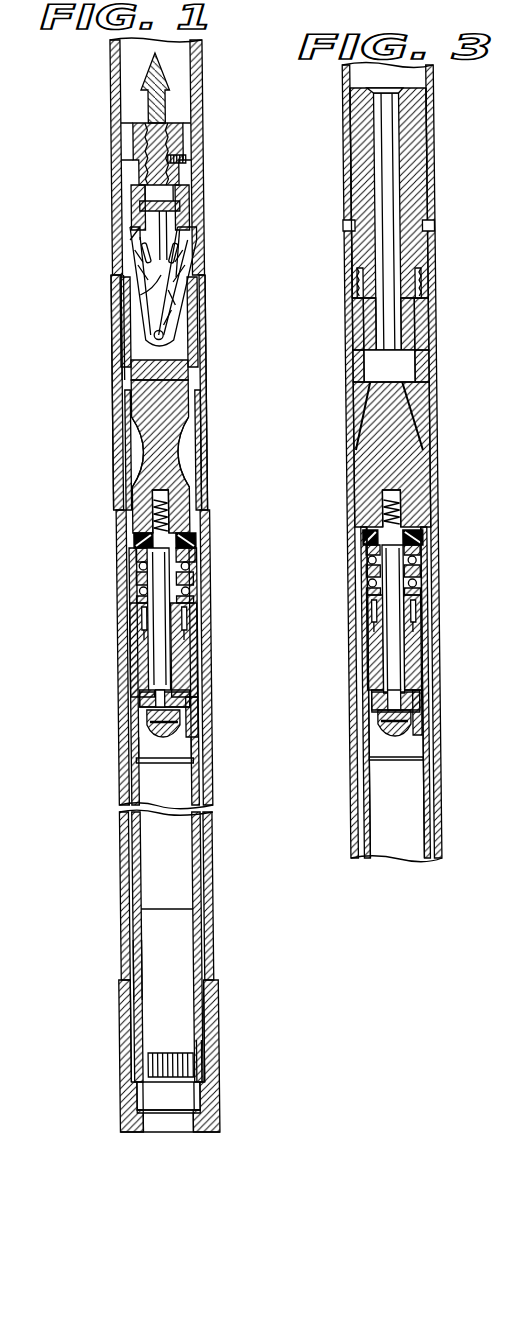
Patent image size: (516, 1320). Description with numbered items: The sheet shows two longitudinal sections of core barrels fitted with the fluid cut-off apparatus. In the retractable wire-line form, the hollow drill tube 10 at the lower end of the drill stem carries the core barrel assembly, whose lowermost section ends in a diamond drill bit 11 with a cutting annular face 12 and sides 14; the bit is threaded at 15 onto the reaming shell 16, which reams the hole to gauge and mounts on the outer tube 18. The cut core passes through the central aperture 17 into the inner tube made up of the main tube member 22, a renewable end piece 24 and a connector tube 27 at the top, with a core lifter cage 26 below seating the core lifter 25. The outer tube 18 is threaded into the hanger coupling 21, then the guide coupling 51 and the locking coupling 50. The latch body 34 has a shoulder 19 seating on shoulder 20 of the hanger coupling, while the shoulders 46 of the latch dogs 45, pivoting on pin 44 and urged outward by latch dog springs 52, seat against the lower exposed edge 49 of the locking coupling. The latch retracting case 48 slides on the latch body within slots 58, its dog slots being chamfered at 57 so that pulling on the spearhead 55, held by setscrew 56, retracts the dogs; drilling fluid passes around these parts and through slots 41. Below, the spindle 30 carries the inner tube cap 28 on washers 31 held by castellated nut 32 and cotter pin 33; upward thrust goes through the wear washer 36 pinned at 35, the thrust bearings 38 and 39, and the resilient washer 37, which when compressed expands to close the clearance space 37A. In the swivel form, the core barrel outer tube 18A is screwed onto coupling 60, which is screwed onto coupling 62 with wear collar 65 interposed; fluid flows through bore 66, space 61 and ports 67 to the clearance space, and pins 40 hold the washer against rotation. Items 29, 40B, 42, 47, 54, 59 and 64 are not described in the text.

In FIG. 1, the drill tube 10 is at (202, 50).
In FIG. 3, the drill tube 10 is at (432, 93).
In FIG. 1, the drill bit 11 is at (208, 1090).
In FIG. 1, the annular face 12 is at (196, 1133).
In FIG. 1, the sides 14 is at (204, 1123).
In FIG. 1, the threads 15 is at (206, 1048).
In FIG. 1, the reaming shell 16 is at (206, 1005).
In FIG. 1, the central aperture 17 is at (160, 1130).
In FIG. 1, the outer tube 18 is at (200, 877).
In FIG. 3, the core barrel outer tube 18A is at (430, 793).
In FIG. 1, the shoulder 19 is at (125, 467).
In FIG. 1, the shoulder 20 is at (125, 457).
In FIG. 1, the hanger coupling 21 is at (202, 482).
In FIG. 1, the main tube member 22 is at (124, 790).
In FIG. 3, the main tube member 22 is at (356, 817).
In FIG. 1, the renewable end piece 24 is at (126, 967).
In FIG. 1, the core lifter 25 is at (142, 1048).
In FIG. 1, the core lifter cage 26 is at (125, 1092).
In FIG. 1, the connector tube 27 is at (132, 720).
In FIG. 3, the connector tube 27 is at (352, 718).
In FIG. 1, the inner tube cap 28 is at (130, 645).
In FIG. 3, the inner tube cap 28 is at (355, 642).
In FIG. 1, the retainer 29 is at (189, 707).
In FIG. 3, the retainer 29 is at (412, 703).
In FIG. 1, the spindle 30 is at (156, 650).
In FIG. 3, the spindle 30 is at (393, 648).
In FIG. 1, the washers 31 is at (132, 697).
In FIG. 3, the washers 31 is at (364, 693).
In FIG. 1, the castellated nut 32 is at (149, 717).
In FIG. 3, the castellated nut 32 is at (367, 708).
In FIG. 1, the cotter pin 33 is at (159, 732).
In FIG. 3, the cotter pin 33 is at (395, 725).
In FIG. 1, the latch body 34 is at (172, 420).
In FIG. 1, the pin 35 is at (183, 618).
In FIG. 3, the pin 35 is at (411, 620).
In FIG. 1, the wear washer 36 is at (188, 602).
In FIG. 3, the wear washer 36 is at (418, 600).
In FIG. 1, the resilient washer 37 is at (187, 540).
In FIG. 3, the resilient washer 37 is at (356, 537).
In FIG. 1, the clearance space 37A is at (124, 540).
In FIG. 3, the clearance space 37A is at (422, 538).
In FIG. 1, the thrust bearing 38 is at (130, 600).
In FIG. 3, the thrust bearing 38 is at (356, 600).
In FIG. 1, the thrust bearing 39 is at (124, 572).
In FIG. 3, the thrust bearing 39 is at (362, 568).
In FIG. 3, the pins 40 is at (412, 522).
In FIG. 3, the spring 40B is at (500, 557).
In FIG. 1, the slots 41 is at (182, 452).
In FIG. 1, the block 42 is at (155, 227).
In FIG. 1, the pin 44 is at (156, 340).
In FIG. 1, the latch dogs 45 is at (134, 268).
In FIG. 1, the shoulders 46 is at (119, 247).
In FIG. 1, the shoulder 47 is at (128, 225).
In FIG. 1, the latch retracting case 48 is at (131, 167).
In FIG. 1, the lower exposed edge 49 is at (184, 235).
In FIG. 1, the locking coupling 50 is at (202, 137).
In FIG. 1, the guide coupling 51 is at (193, 348).
In FIG. 3, the guide coupling 51 is at (513, 248).
In FIG. 1, the latch dog springs 52 is at (142, 285).
In FIG. 1, the liner 54 is at (108, 392).
In FIG. 1, the spearhead 55 is at (164, 80).
In FIG. 1, the setscrew 56 is at (188, 160).
In FIG. 1, the chamfers 57 is at (197, 290).
In FIG. 1, the slots 58 is at (166, 360).
In FIG. 1, the outer wall 59 is at (108, 313).
In FIG. 3, the coupling 60 is at (426, 340).
In FIG. 3, the space 61 is at (396, 365).
In FIG. 3, the coupling 62 is at (420, 193).
In FIG. 3, the upper body 64 is at (430, 130).
In FIG. 3, the wear collar 65 is at (422, 258).
In FIG. 3, the bore 66 is at (380, 190).
In FIG. 3, the ports 67 is at (360, 405).